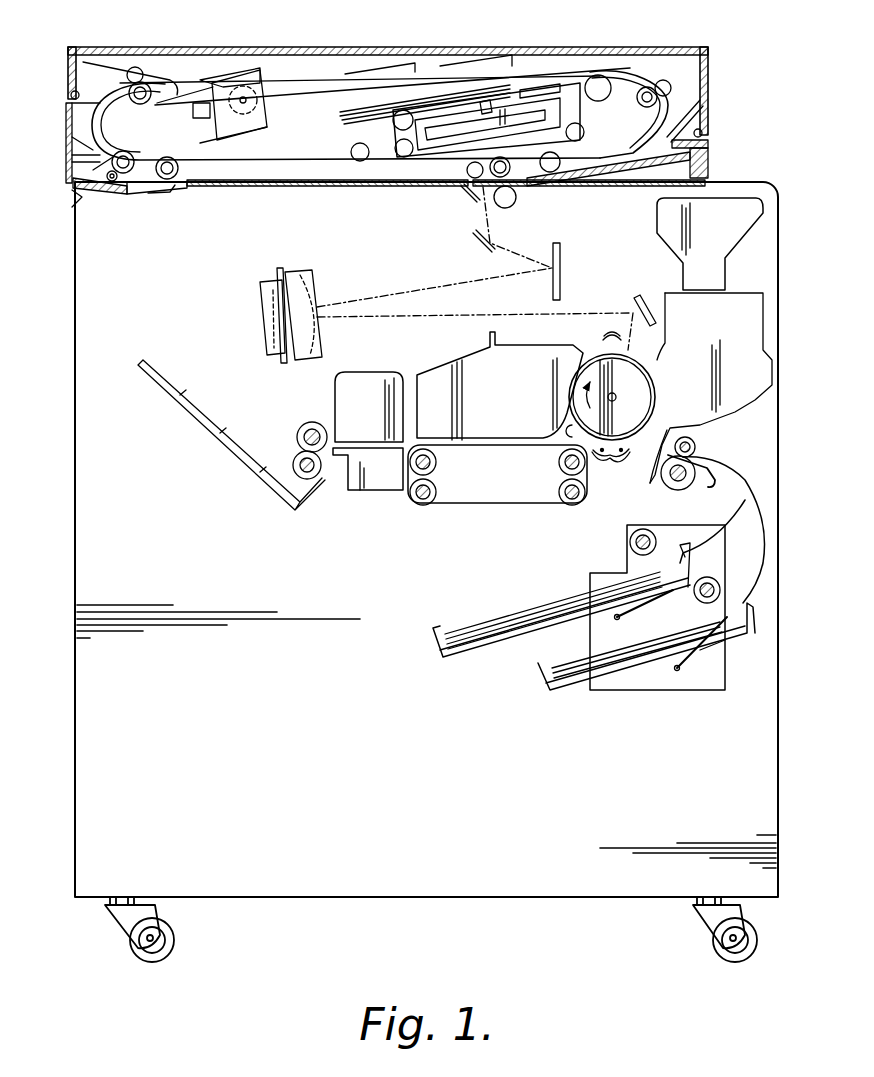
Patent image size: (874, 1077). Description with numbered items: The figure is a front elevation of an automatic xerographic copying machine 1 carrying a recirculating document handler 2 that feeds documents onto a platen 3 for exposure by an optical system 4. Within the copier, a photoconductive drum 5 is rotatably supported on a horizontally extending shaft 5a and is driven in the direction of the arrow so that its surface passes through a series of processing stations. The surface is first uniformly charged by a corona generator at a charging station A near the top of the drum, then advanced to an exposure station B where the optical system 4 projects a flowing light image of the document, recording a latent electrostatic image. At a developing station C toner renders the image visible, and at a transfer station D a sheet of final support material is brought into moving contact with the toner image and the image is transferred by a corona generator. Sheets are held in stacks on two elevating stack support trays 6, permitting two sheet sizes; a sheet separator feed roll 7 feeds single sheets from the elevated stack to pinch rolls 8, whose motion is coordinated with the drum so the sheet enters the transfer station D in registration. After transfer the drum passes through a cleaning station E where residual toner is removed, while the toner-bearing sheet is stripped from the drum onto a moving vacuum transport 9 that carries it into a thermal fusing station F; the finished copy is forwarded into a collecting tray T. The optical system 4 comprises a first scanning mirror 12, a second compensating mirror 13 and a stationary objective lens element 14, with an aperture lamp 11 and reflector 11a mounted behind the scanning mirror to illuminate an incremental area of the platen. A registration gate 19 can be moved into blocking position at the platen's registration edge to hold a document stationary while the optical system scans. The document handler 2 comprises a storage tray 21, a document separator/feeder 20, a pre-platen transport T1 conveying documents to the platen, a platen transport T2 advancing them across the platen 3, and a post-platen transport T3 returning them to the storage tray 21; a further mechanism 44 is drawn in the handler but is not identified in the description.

The automatic xerographic copying machine 1 is at (780, 232).
The recirculating document handler 2 is at (715, 53).
The platen 3 is at (318, 184).
The optical system 4 is at (540, 218).
The photoconductive drum 5 is at (642, 377).
The shaft 5a is at (616, 396).
The elevating stack support trays 6 is at (465, 652).
The sheet separator feed roll 7 is at (630, 542).
The pinch rolls 8 is at (695, 447).
The moving vacuum transport 9 is at (462, 510).
The aperture lamp 11 is at (517, 198).
The reflector 11a is at (463, 197).
The first scanning mirror 12 is at (474, 236).
The second compensating mirror 13 is at (562, 277).
The stationary objective lens element 14 is at (263, 315).
The registration member or gate 19 is at (178, 187).
The document separator/feeder 20 is at (470, 102).
The storage tray 21 is at (408, 82).
The feed mechanism 44 is at (251, 66).
The charging station A is at (613, 325).
The exposure station B is at (632, 350).
The developing station C is at (616, 465).
The transfer station D is at (617, 465).
The cleaning station E is at (545, 355).
The thermal fusing station F is at (367, 385).
The collecting tray T is at (198, 415).
The pre-platen transport T1 is at (676, 88).
The platen transport T2 is at (318, 155).
The post-platen transport T3 is at (82, 122).